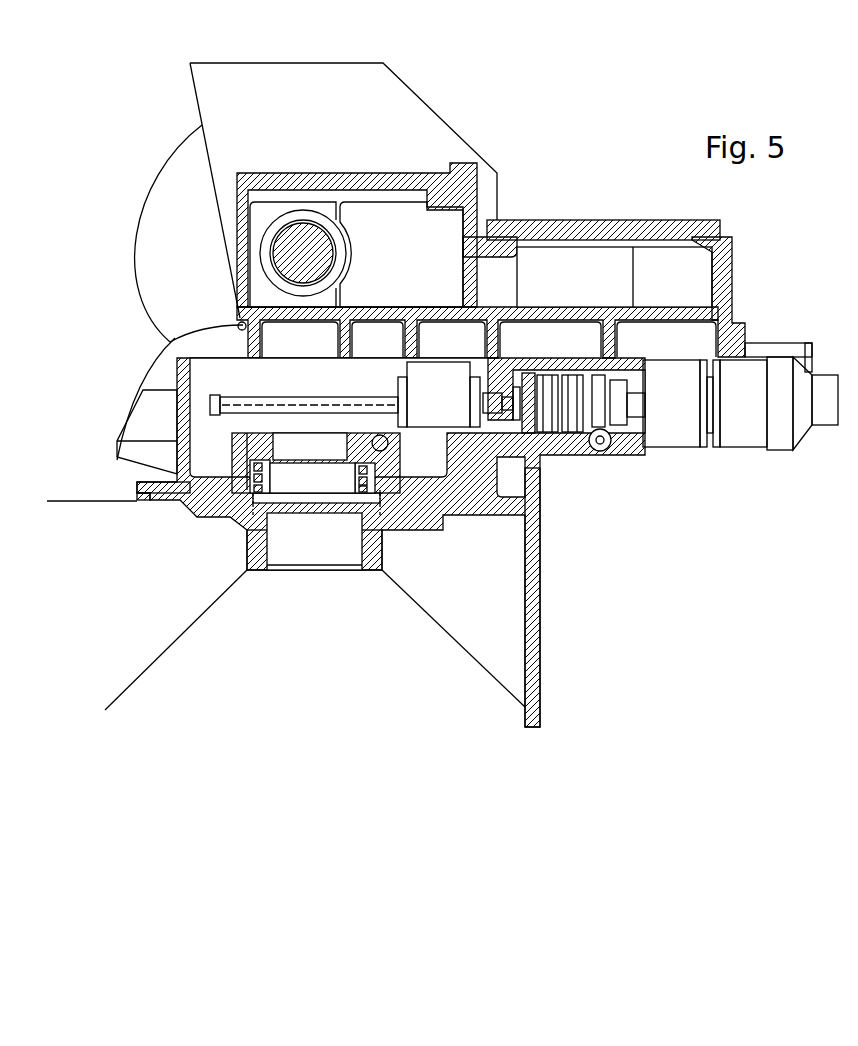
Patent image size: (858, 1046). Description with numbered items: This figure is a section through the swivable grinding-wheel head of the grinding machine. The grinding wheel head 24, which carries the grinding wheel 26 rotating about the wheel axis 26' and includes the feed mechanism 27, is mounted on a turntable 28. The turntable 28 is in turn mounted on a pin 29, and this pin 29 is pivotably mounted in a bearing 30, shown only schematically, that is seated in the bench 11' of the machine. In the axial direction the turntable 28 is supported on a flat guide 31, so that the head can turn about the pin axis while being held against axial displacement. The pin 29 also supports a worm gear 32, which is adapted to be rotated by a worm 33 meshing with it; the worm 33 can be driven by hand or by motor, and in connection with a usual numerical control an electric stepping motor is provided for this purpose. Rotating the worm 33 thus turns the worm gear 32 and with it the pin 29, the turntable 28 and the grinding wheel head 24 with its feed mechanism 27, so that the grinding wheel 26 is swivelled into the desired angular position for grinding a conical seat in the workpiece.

The grinding wheel 26 is at (300, 268).
The wheel axis 26' is at (303, 253).
The grinding wheel head 24 is at (587, 222).
The worm gear 32 is at (260, 437).
The pin 29 is at (327, 459).
The worm 33 is at (388, 443).
The bearing 30 is at (327, 545).
The turntable 28 is at (135, 488).
The flat guide 31 is at (147, 497).
The feed mechanism 27 is at (594, 464).
The bench 11' is at (555, 597).